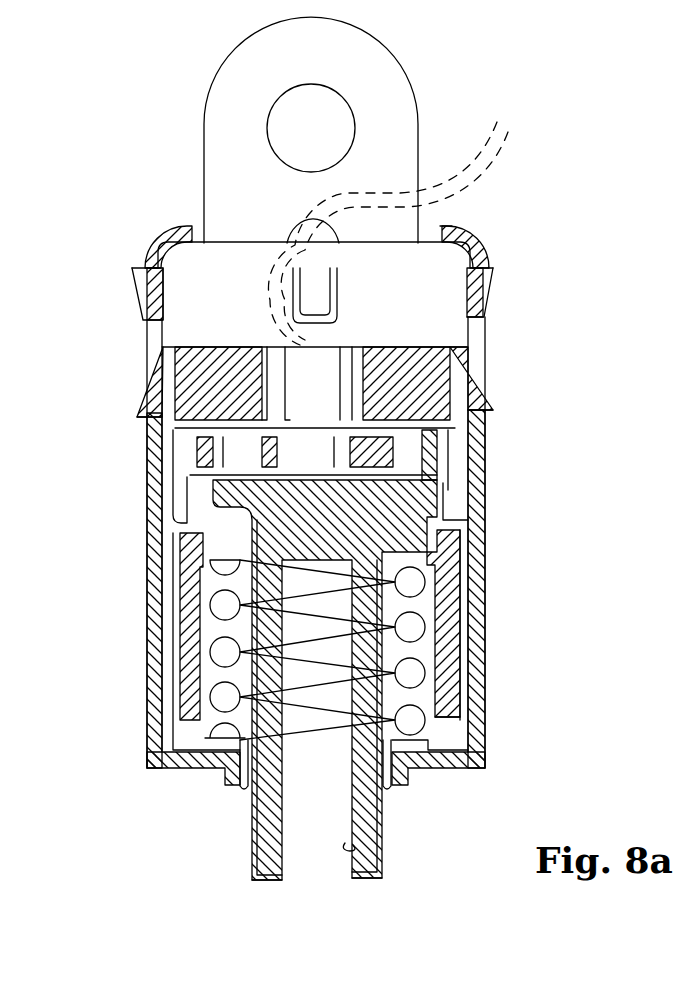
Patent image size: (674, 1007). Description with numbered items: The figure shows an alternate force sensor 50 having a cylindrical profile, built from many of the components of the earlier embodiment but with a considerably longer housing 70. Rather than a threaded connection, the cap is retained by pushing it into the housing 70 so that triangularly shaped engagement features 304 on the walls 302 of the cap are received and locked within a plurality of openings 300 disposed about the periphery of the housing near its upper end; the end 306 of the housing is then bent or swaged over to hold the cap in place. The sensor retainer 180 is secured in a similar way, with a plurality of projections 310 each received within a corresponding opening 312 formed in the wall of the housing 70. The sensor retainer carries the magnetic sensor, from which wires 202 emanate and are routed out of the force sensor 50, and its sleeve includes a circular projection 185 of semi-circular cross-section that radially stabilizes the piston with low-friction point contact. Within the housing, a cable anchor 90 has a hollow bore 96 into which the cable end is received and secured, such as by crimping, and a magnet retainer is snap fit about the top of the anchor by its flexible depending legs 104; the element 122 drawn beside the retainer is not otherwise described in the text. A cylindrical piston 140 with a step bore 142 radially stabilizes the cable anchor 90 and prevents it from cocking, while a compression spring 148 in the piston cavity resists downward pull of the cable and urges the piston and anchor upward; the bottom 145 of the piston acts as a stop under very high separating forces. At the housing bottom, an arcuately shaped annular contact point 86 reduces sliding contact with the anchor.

The force sensor 50 is at (172, 186).
The wires 202 is at (455, 170).
The walls of the cap 302 is at (178, 318).
The end of the housing 306 is at (457, 225).
The openings 300 is at (147, 280).
The engagement features 304 is at (132, 284).
The sensor retainer 180 is at (458, 363).
The projections 310 is at (158, 396).
The openings 312 is at (143, 413).
The housing 70 is at (147, 582).
The annular contact point 86 is at (235, 780).
The plate 122 is at (250, 473).
The step bore 142 is at (213, 505).
The circular projection 185 is at (450, 505).
The flexible depending legs 104 is at (425, 478).
The cable anchor 90 is at (372, 820).
The hollow bore 96 is at (355, 848).
The cylindrical piston 140 is at (474, 549).
The compression spring 148 is at (412, 628).
The bottom of the piston 145 is at (450, 722).